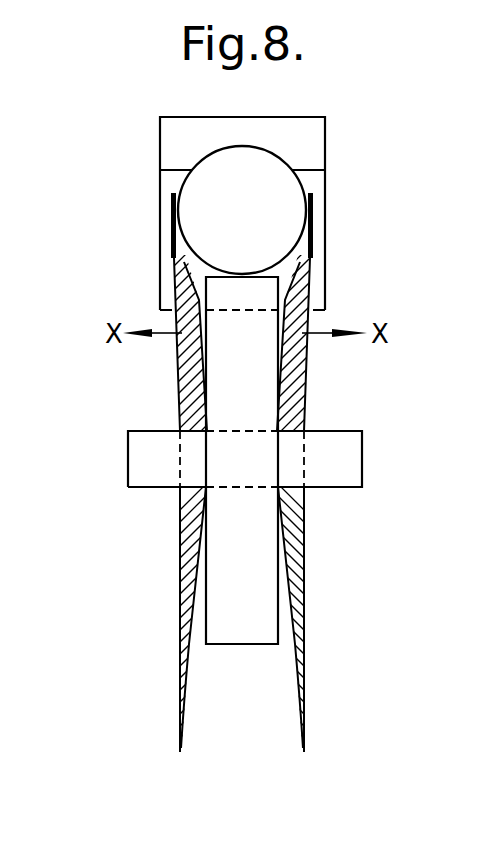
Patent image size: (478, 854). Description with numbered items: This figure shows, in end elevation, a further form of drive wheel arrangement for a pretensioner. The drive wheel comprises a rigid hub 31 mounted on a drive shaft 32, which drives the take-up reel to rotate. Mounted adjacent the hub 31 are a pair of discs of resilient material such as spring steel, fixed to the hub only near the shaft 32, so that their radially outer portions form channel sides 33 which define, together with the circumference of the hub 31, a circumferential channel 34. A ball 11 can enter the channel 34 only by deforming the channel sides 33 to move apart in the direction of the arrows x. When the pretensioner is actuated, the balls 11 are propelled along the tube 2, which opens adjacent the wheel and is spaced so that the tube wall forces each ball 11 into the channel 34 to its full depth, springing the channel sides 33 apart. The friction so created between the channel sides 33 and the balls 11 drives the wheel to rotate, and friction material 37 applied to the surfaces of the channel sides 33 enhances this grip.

The tube 2 is at (177, 142).
The ball 11 is at (278, 171).
The friction material 37 is at (284, 259).
The rigid hub 31 is at (257, 594).
The drive shaft 32 is at (340, 475).
The channel sides 33 is at (286, 652).
The circumferential channel 34 is at (240, 718).